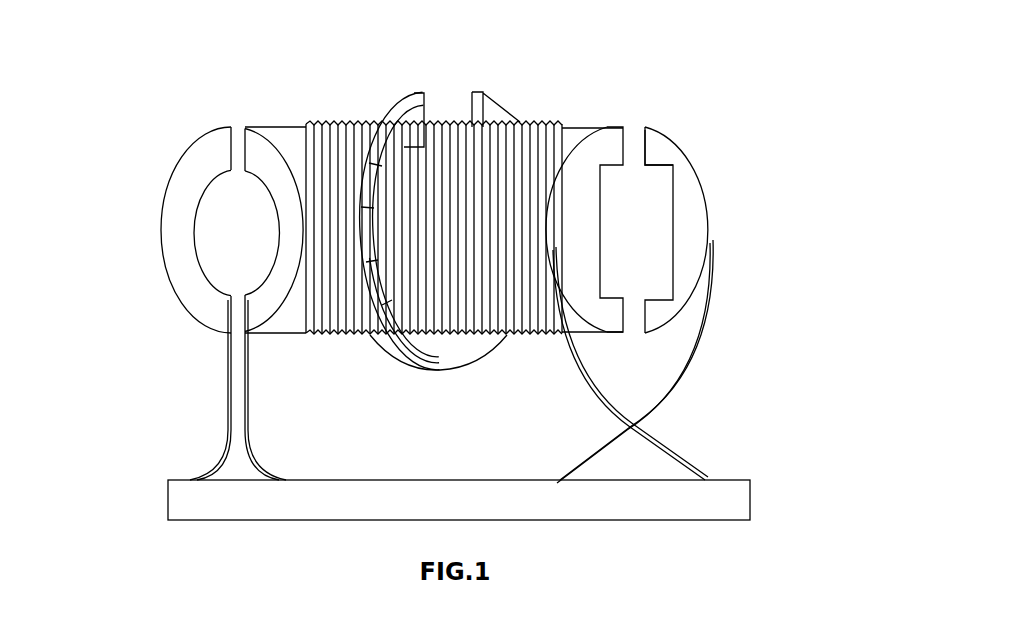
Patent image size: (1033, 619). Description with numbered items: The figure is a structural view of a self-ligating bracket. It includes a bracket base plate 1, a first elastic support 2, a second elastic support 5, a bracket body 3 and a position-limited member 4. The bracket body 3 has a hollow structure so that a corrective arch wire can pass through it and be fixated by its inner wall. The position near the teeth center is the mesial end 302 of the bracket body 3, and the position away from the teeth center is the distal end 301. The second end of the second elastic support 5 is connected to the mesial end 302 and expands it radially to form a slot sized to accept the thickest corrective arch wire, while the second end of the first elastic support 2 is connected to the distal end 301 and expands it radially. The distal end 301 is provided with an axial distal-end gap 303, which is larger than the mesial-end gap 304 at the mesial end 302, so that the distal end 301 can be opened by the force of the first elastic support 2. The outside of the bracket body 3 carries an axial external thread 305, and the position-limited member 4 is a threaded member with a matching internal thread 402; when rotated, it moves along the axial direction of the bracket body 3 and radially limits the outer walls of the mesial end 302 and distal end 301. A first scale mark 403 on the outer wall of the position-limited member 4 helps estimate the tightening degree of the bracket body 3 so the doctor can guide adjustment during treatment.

The bracket base plate 1 is at (347, 498).
The first elastic support 2 is at (702, 376).
The bracket body 3 is at (288, 146).
The distal end 301 is at (620, 127).
The mesial end 302 is at (198, 163).
The distal-end gap 303 is at (635, 148).
The mesial-end gap 304 is at (233, 323).
The external thread 305 is at (470, 160).
The position-limited member 4 is at (392, 222).
The internal thread 402 is at (415, 93).
The first scale mark 403 is at (370, 330).
The second elastic support 5 is at (224, 416).